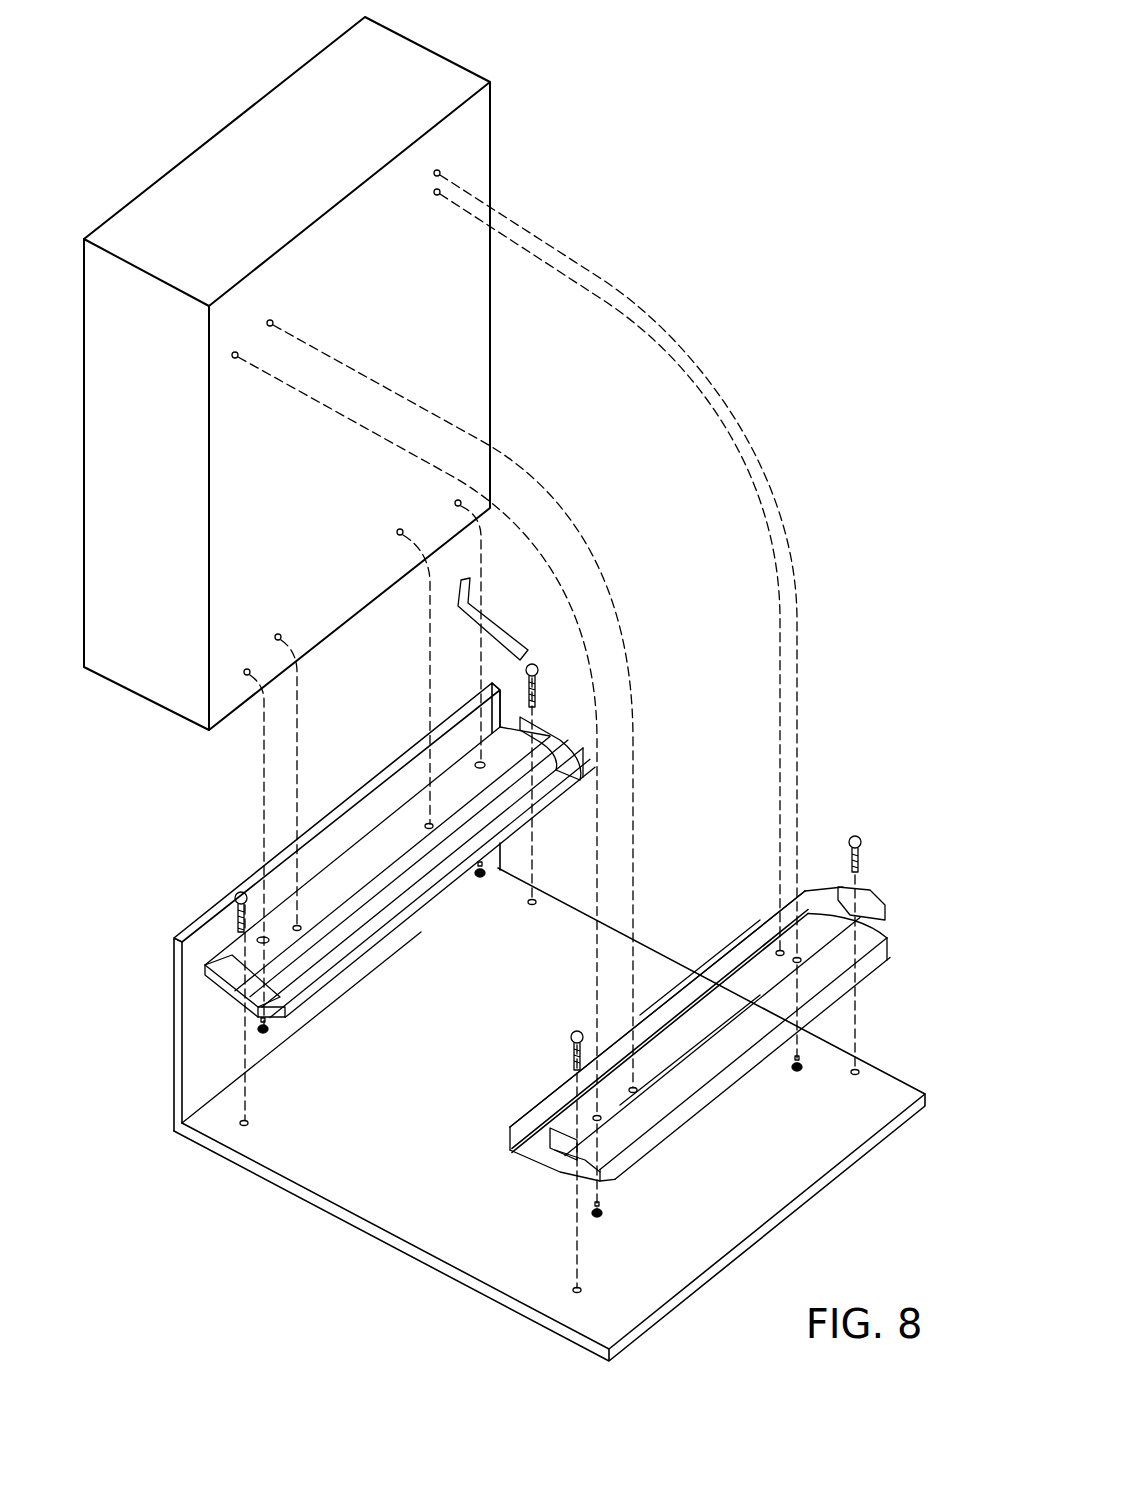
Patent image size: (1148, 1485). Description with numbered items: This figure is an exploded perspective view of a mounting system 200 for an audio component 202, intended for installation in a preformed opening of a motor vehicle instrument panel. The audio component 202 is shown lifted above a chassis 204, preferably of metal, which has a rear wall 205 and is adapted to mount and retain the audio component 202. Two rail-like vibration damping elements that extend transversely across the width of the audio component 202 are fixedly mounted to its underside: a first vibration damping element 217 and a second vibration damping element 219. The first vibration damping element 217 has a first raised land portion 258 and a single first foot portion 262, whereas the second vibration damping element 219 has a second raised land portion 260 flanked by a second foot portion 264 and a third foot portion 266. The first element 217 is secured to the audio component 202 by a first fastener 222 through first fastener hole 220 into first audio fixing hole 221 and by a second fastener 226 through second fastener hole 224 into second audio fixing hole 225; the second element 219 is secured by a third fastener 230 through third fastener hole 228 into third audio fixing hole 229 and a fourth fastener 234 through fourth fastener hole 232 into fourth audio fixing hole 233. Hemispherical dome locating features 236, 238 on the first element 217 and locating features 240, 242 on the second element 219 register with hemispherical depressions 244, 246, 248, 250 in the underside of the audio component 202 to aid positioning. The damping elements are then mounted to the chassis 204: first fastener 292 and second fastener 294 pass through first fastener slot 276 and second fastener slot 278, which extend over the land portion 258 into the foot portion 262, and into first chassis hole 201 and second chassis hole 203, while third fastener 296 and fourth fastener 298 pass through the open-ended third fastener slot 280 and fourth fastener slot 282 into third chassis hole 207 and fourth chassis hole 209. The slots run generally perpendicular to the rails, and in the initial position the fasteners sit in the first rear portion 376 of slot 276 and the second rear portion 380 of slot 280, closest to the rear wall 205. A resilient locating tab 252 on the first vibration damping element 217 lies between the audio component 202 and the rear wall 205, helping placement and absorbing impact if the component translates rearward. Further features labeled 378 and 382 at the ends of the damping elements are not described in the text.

The mounting system 200 is at (833, 753).
The first chassis hole 201 is at (250, 1123).
The audio component 202 is at (236, 150).
The second chassis hole 203 is at (533, 906).
The chassis 204 is at (160, 1033).
The rear wall 205 is at (176, 975).
The third chassis hole 207 is at (577, 1295).
The fourth chassis hole 209 is at (860, 1072).
The first vibration damping element 217 is at (218, 940).
The second vibration damping element 219 is at (530, 1096).
The first fastener hole 220 is at (260, 935).
The first audio fixing hole 221 is at (244, 670).
The first fastener 222 is at (258, 1033).
The second fastener hole 224 is at (486, 767).
The second audio fixing hole 225 is at (462, 500).
The second fastener 226 is at (495, 870).
The third fastener hole 228 is at (600, 1124).
The third audio fixing hole 229 is at (232, 354).
The third fastener 230 is at (602, 1218).
The fourth fastener hole 232 is at (803, 962).
The fourth audio fixing hole 233 is at (441, 173).
The fourth fastener 234 is at (805, 1070).
The locating feature 236 is at (300, 930).
The locating feature 238 is at (432, 830).
The locating feature 240 is at (636, 1094).
The locating feature 242 is at (775, 952).
The hemispherical depression 244 is at (280, 633).
The hemispherical depression 246 is at (398, 529).
The hemispherical depression 248 is at (272, 320).
The hemispherical depression 250 is at (434, 195).
The locating tab 252 is at (515, 638).
The first raised land portion 258 is at (204, 986).
The second raised land portion 260 is at (690, 1050).
The first foot portion 262 is at (290, 1013).
The second foot portion 264 is at (520, 1120).
The third foot portion 266 is at (700, 1100).
The first fastener slot 276 is at (232, 975).
The second fastener slot 278 is at (550, 735).
The third fastener slot 280 is at (565, 1165).
The fourth fastener slot 282 is at (870, 890).
The first fastener 292 is at (238, 896).
The second fastener 294 is at (540, 670).
The third fastener 296 is at (572, 1035).
The fourth fastener 298 is at (857, 836).
The first rear portion 376 is at (172, 935).
The tab 378 is at (490, 705).
The second rear portion 380 is at (553, 1150).
The tab 382 is at (843, 884).